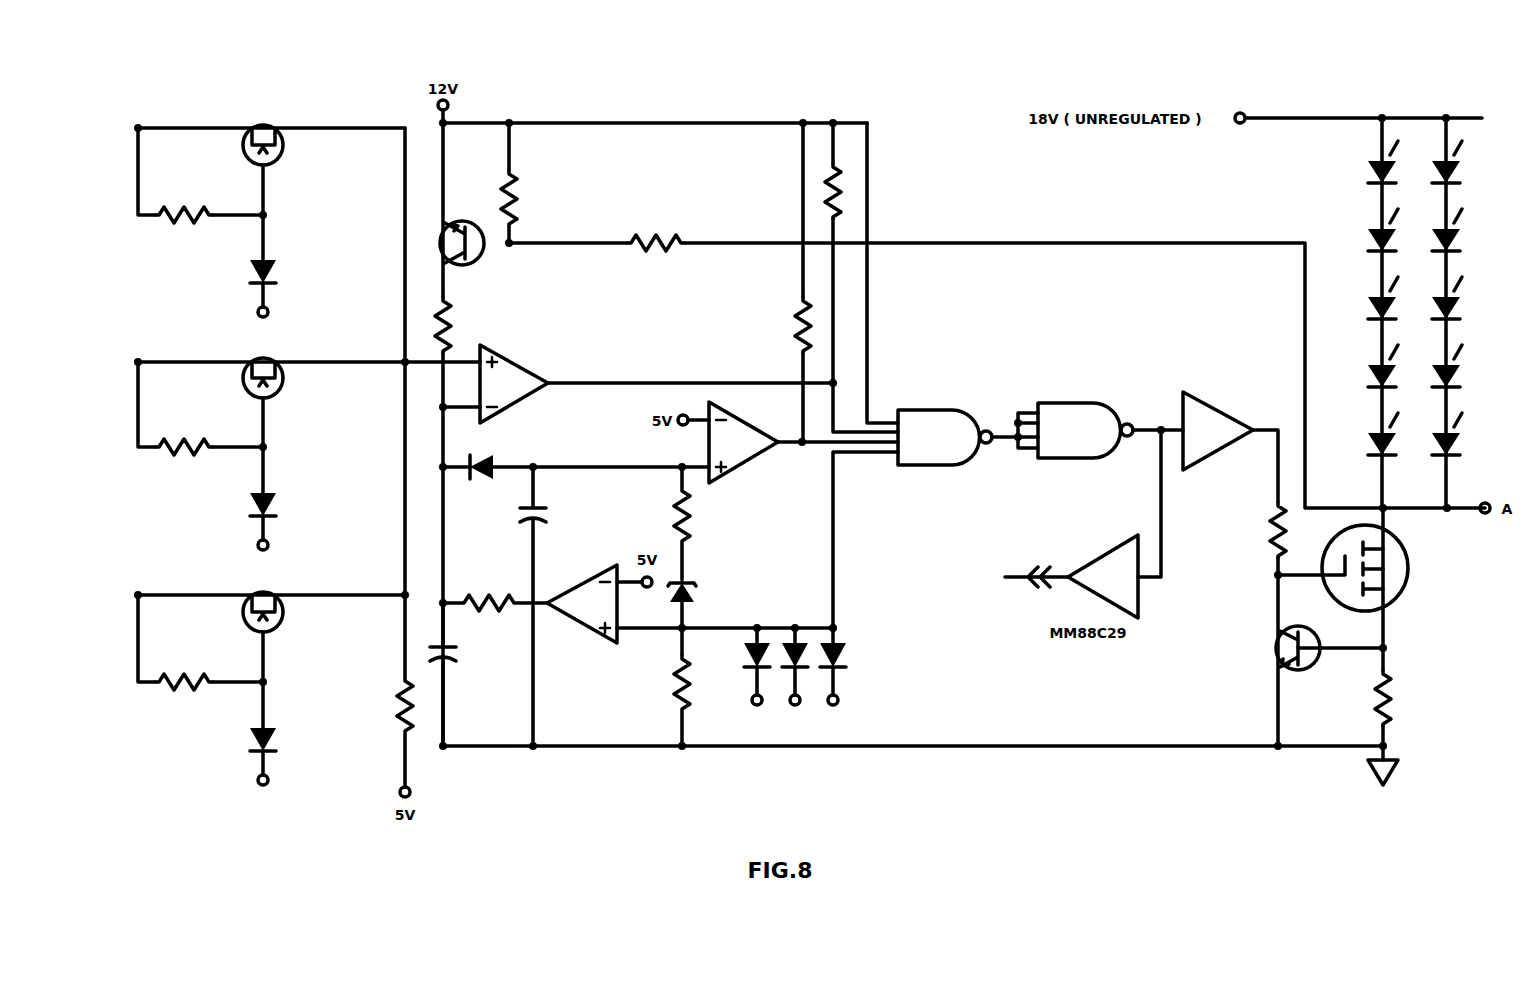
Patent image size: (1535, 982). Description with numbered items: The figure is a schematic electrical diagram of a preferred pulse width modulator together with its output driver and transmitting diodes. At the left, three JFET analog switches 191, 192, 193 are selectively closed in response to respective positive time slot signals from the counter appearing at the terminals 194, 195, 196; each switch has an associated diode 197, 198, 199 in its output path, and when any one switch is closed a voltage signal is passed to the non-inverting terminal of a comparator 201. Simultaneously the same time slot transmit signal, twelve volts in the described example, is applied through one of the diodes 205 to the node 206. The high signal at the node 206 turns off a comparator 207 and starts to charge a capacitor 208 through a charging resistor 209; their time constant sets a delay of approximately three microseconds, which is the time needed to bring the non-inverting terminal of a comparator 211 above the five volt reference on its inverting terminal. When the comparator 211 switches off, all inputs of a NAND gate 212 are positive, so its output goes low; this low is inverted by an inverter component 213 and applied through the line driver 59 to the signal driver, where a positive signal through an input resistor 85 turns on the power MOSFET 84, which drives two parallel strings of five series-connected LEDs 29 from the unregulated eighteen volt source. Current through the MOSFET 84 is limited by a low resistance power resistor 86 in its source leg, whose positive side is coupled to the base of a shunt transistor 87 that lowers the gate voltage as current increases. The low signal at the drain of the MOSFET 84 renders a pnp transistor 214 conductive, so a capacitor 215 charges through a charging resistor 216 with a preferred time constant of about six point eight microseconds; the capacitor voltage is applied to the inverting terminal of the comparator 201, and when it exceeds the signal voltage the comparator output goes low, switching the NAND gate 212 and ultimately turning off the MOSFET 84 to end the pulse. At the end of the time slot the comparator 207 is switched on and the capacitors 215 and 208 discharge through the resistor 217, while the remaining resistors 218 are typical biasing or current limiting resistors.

The JFET analog switch 191 is at (287, 145).
The JFET analog switch 192 is at (287, 378).
The JFET analog switch 193 is at (287, 612).
The diode 197 is at (278, 280).
The diode 198 is at (278, 513).
The diode 199 is at (278, 748).
The terminal 194 is at (268, 310).
The terminal 195 is at (268, 543).
The terminal 196 is at (268, 778).
The resistors 218 is at (512, 180).
The pnp transistor 214 is at (482, 262).
The charging resistor 216 is at (447, 305).
The comparator 201 is at (517, 407).
The comparator 211 is at (748, 450).
The charging resistor 209 is at (695, 521).
The capacitor 208 is at (517, 506).
The resistor 217 is at (483, 613).
The capacitor 215 is at (433, 665).
The comparator 207 is at (577, 625).
The node 206 is at (838, 618).
The diodes 205 is at (848, 665).
The NAND gate 212 is at (923, 410).
The inverter component 213 is at (1065, 403).
The line driver 59 is at (1218, 450).
The input resistor 85 is at (1262, 540).
The transistor 87 is at (1275, 645).
The MOSFET 84 is at (1408, 567).
The power resistor 86 is at (1400, 690).
The LEDs 29 is at (1321, 181).